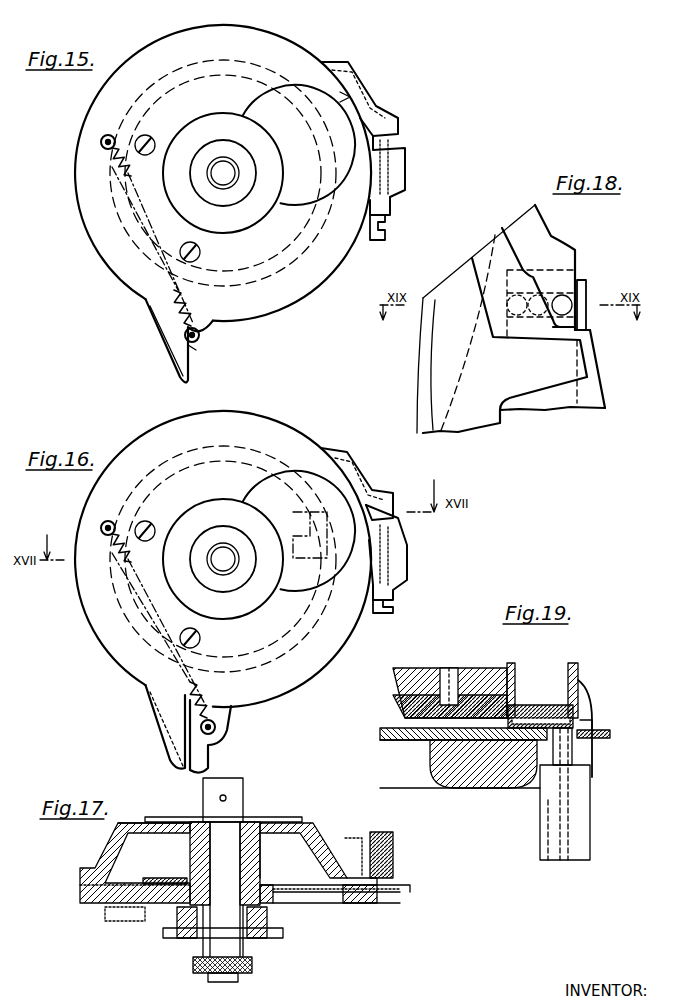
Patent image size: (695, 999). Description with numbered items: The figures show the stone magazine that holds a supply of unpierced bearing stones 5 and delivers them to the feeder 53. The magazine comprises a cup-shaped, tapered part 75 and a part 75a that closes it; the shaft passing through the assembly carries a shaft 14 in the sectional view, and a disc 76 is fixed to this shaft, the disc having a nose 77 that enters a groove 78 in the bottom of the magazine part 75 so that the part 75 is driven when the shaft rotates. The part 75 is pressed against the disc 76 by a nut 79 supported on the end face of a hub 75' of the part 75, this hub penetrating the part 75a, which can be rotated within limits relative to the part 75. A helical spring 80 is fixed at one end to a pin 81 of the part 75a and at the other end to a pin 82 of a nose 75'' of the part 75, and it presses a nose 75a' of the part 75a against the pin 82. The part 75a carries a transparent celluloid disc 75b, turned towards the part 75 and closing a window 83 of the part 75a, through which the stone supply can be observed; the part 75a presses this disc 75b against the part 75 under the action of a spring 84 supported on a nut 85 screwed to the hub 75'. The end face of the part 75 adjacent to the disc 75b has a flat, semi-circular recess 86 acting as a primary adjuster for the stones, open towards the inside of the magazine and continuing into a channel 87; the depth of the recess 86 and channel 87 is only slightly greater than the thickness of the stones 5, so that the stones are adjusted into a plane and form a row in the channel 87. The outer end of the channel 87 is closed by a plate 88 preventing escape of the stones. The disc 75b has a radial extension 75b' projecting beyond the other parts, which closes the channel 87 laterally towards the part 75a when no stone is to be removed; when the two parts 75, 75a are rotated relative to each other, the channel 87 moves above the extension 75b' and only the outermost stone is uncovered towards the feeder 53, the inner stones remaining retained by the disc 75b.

In FIG. 18, the bearing stones 5 is at (570, 304).
In FIG. 19, the bearing stones 5 is at (555, 705).
In FIG. 17, the shaft 14 is at (228, 830).
In FIG. 19, the feeder 53 is at (585, 790).
In FIG. 15, the cup-shaped, tapered magazine part 75 is at (223, 173).
In FIG. 16, the cup-shaped, tapered magazine part 75 is at (223, 559).
In FIG. 17, the cup-shaped, tapered magazine part 75 is at (222, 863).
In FIG. 19, the cup-shaped, tapered magazine part 75 is at (485, 678).
In FIG. 15, the hub 75' is at (223, 173).
In FIG. 16, the hub 75' is at (223, 559).
In FIG. 17, the hub 75' is at (281, 855).
In FIG. 15, the nose 75'' is at (221, 365).
In FIG. 16, the nose 75'' is at (224, 736).
In FIG. 18, the closing magazine part 75a is at (511, 341).
In FIG. 17, the closing magazine part 75a is at (121, 908).
In FIG. 19, the closing magazine part 75a is at (518, 776).
In FIG. 15, the nose 75a' is at (187, 349).
In FIG. 16, the nose 75a' is at (146, 727).
In FIG. 15, the transparent disc 75b is at (359, 86).
In FIG. 16, the transparent disc 75b is at (357, 484).
In FIG. 18, the transparent disc 75b is at (516, 330).
In FIG. 17, the transparent disc 75b is at (152, 865).
In FIG. 19, the transparent disc 75b is at (405, 756).
In FIG. 15, the radial extension 75b' is at (416, 188).
In FIG. 16, the radial extension 75b' is at (386, 559).
In FIG. 18, the radial extension 75b' is at (610, 347).
In FIG. 17, the radial extension 75b' is at (398, 876).
In FIG. 19, the radial extension 75b' is at (613, 747).
In FIG. 17, the disc 76 is at (300, 822).
In FIG. 17, the nose 77 is at (158, 817).
In FIG. 17, the groove 78 is at (130, 823).
In FIG. 17, the nut 79 is at (255, 965).
In FIG. 15, the helical spring 80 is at (178, 288).
In FIG. 16, the helical spring 80 is at (190, 680).
In FIG. 17, the helical spring 80 is at (130, 921).
In FIG. 15, the pin 81 is at (101, 143).
In FIG. 16, the pin 81 is at (101, 527).
In FIG. 15, the pin 82 is at (200, 338).
In FIG. 16, the pin 82 is at (216, 728).
In FIG. 15, the window 83 is at (300, 87).
In FIG. 16, the window 83 is at (330, 576).
In FIG. 17, the window 83 is at (345, 905).
In FIG. 19, the window 83 is at (430, 765).
In FIG. 17, the spring 84 is at (268, 920).
In FIG. 17, the nut 85 is at (285, 938).
In FIG. 15, the semi-circular recess 86 is at (350, 97).
In FIG. 18, the semi-circular recess 86 is at (499, 371).
In FIG. 17, the semi-circular recess 86 is at (375, 905).
In FIG. 19, the semi-circular recess 86 is at (478, 770).
In FIG. 18, the channel 87 is at (553, 292).
In FIG. 19, the channel 87 is at (590, 720).
In FIG. 18, the plate 88 is at (590, 316).
In FIG. 19, the plate 88 is at (595, 723).